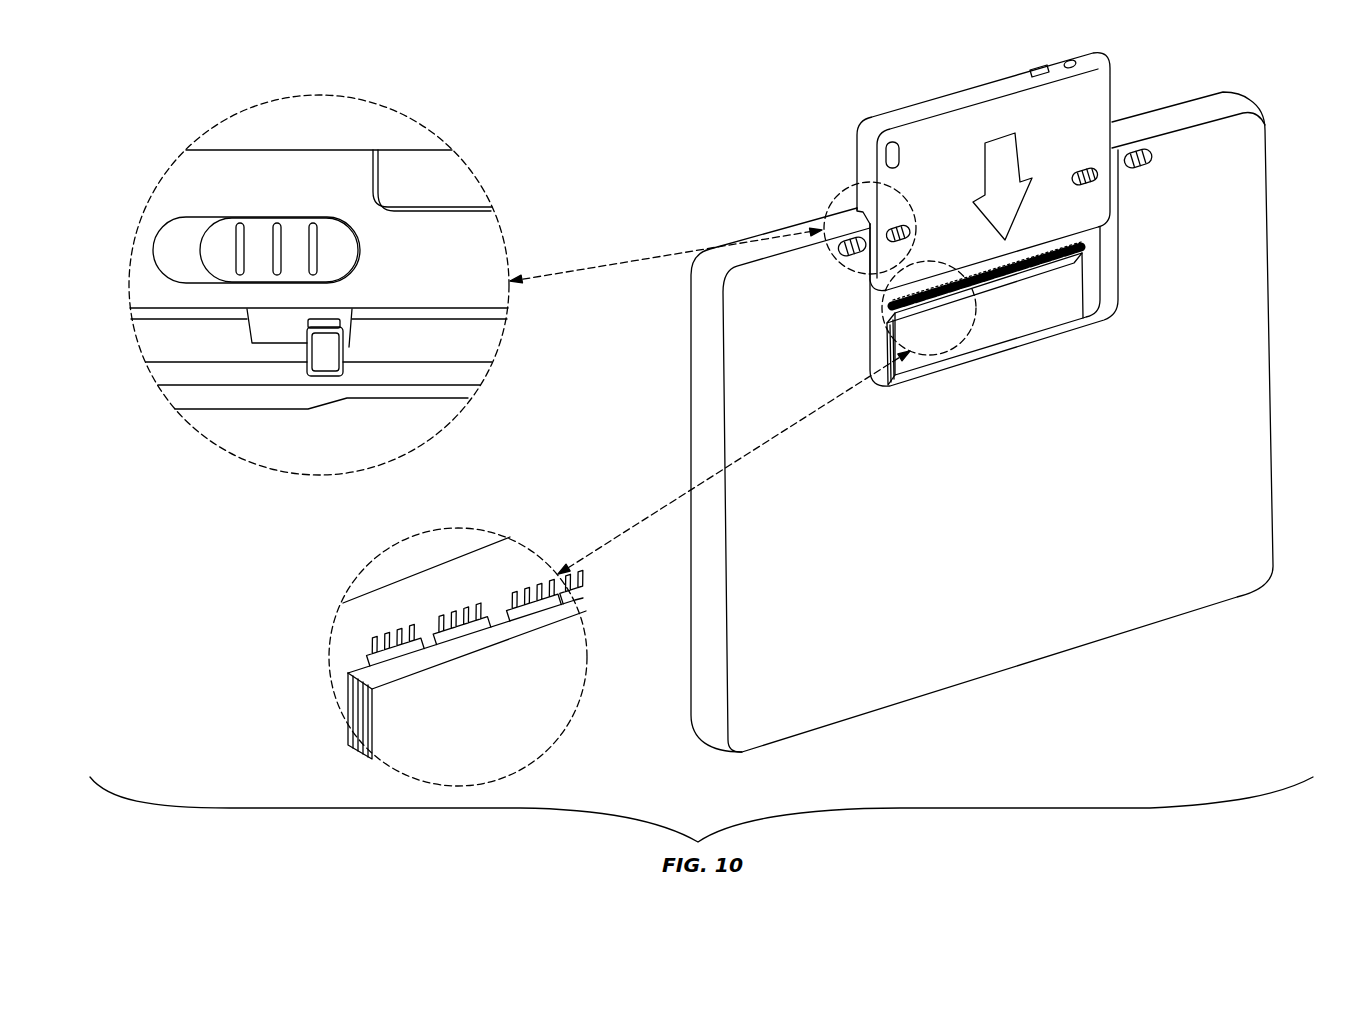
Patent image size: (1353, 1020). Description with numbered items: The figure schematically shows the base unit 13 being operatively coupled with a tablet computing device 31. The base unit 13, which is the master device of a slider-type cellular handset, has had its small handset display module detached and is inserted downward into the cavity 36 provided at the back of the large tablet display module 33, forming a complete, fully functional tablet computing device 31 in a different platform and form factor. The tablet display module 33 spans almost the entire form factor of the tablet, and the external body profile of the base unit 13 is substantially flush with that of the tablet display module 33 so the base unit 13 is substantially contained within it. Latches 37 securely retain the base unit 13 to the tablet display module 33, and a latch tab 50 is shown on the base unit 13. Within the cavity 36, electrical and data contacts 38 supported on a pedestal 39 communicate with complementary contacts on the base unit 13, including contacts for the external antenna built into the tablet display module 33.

The base unit 13 is at (1087, 82).
The tablet computing device 31 is at (1015, 692).
The tablet display module 33 is at (1258, 369).
The cavity 36 is at (1108, 244).
The latches 37 is at (1134, 152).
The electrical and data contacts 38 is at (1039, 256).
The pedestal 39 is at (1075, 289).
The tab 50 is at (1090, 167).